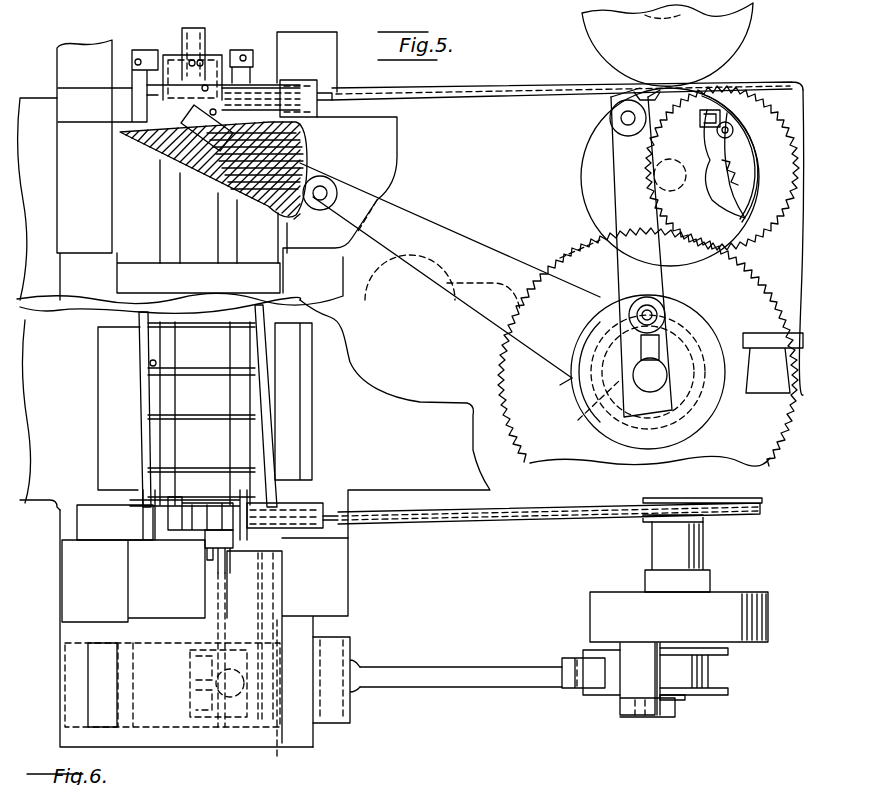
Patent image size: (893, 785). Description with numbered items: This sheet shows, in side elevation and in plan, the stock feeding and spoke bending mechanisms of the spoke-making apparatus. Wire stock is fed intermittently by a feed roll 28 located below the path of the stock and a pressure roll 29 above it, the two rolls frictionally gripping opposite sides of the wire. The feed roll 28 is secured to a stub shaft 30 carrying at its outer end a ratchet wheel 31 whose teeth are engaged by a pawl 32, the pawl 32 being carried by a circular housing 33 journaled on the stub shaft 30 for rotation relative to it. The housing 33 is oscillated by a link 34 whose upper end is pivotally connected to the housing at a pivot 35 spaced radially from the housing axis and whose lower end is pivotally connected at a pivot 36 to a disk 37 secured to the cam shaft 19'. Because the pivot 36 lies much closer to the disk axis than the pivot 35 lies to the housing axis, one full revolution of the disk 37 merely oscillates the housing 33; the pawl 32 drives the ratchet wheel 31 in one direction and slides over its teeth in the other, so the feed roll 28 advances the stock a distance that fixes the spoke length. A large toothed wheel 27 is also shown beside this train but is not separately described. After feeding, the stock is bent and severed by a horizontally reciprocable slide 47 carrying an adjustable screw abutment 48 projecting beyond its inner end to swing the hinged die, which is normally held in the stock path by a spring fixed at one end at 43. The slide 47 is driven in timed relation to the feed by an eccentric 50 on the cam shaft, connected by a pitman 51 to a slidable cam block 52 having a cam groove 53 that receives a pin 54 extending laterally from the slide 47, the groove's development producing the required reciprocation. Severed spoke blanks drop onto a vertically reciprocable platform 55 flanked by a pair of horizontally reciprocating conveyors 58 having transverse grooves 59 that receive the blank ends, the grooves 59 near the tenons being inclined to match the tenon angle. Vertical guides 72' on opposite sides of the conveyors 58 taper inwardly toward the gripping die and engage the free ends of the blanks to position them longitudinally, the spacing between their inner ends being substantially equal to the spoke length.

In FIG. 5, the shaft 19' is at (562, 435).
In FIG. 5, the gear 27 is at (748, 250).
In FIG. 5, the feed roll 28 is at (608, 106).
In FIG. 5, the pressure roll 29 is at (613, 58).
In FIG. 6, the pressure roll 29 is at (610, 518).
In FIG. 5, the stub shaft 30 is at (637, 175).
In FIG. 6, the stub shaft 30 is at (662, 545).
In FIG. 5, the ratchet wheel 31 is at (717, 175).
In FIG. 5, the pawl 32 is at (732, 150).
In FIG. 6, the circular housing 33 is at (610, 622).
In FIG. 5, the link 34 is at (623, 203).
In FIG. 6, the link 34 is at (667, 715).
In FIG. 5, the pivotal connection 35 is at (610, 128).
In FIG. 6, the pivotal connection 35 is at (633, 717).
In FIG. 5, the pivotal connection 36 is at (652, 312).
In FIG. 5, the disk 37 is at (703, 333).
In FIG. 6, the disk 37 is at (717, 690).
In FIG. 6, the fixed end of spring 43 is at (200, 532).
In FIG. 6, the slide 47 is at (222, 540).
In FIG. 6, the abutment 48 is at (208, 535).
In FIG. 5, the eccentric 50 is at (560, 385).
In FIG. 6, the eccentric 50 is at (713, 672).
In FIG. 5, the pitman 51 is at (445, 237).
In FIG. 6, the pitman 51 is at (423, 677).
In FIG. 5, the cam block 52 is at (300, 168).
In FIG. 6, the cam block 52 is at (320, 638).
In FIG. 5, the cam groove 53 is at (180, 135).
In FIG. 6, the cam groove 53 is at (193, 725).
In FIG. 5, the pin 54 is at (200, 185).
In FIG. 6, the pin 54 is at (230, 723).
In FIG. 6, the platform 55 is at (238, 437).
In FIG. 6, the conveyors 58 is at (160, 437).
In FIG. 6, the transverse grooves 59 is at (579, 774).
In FIG. 6, the vertical guides 72' is at (433, 554).